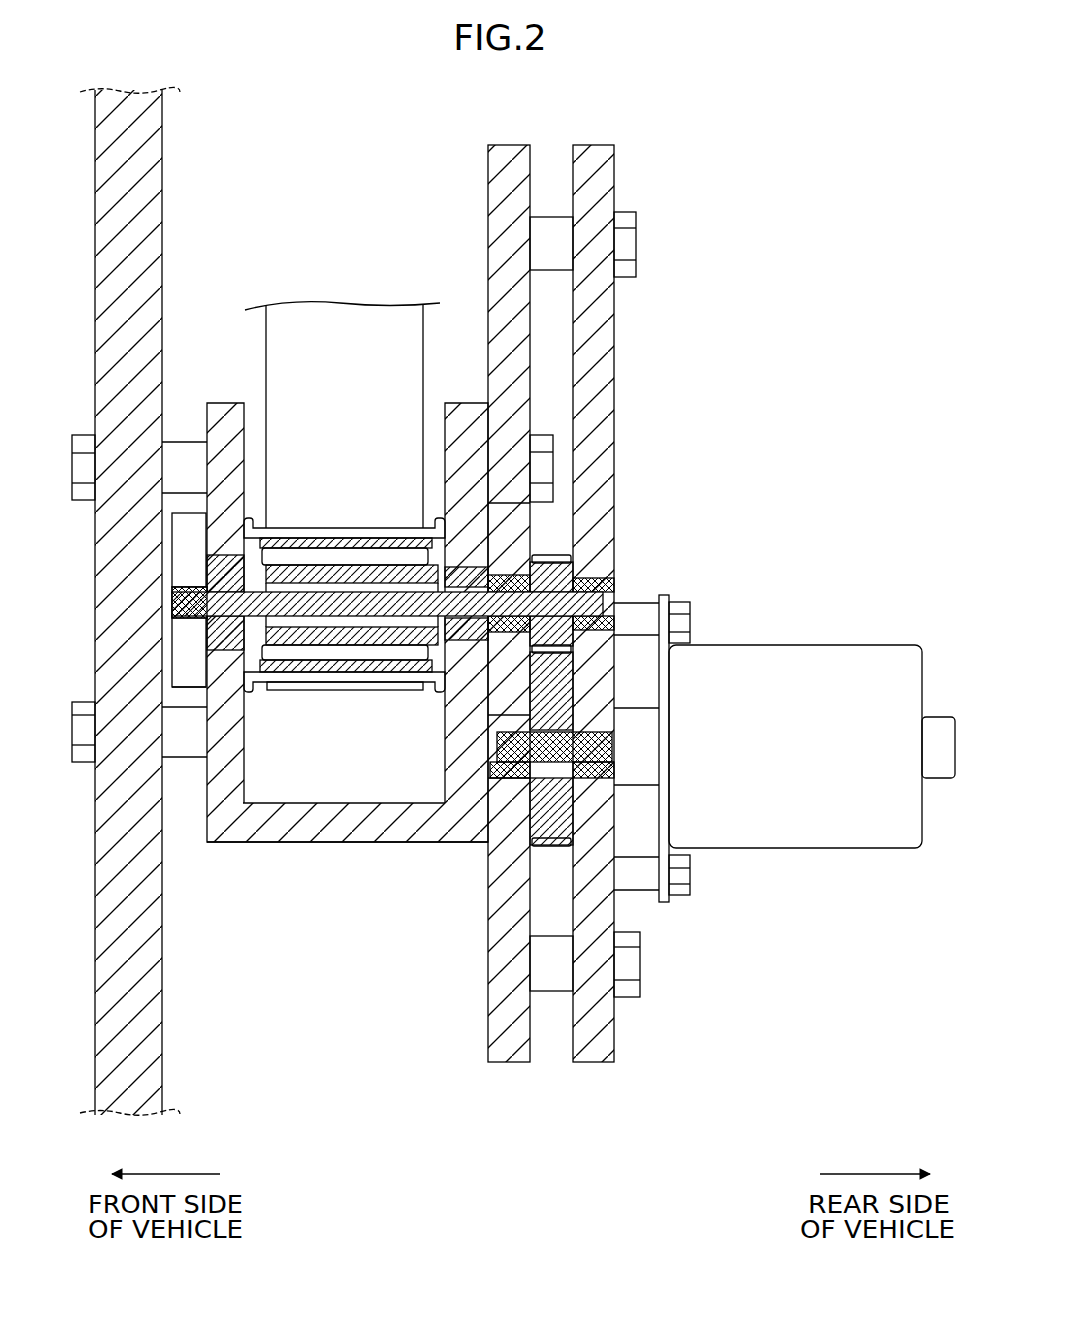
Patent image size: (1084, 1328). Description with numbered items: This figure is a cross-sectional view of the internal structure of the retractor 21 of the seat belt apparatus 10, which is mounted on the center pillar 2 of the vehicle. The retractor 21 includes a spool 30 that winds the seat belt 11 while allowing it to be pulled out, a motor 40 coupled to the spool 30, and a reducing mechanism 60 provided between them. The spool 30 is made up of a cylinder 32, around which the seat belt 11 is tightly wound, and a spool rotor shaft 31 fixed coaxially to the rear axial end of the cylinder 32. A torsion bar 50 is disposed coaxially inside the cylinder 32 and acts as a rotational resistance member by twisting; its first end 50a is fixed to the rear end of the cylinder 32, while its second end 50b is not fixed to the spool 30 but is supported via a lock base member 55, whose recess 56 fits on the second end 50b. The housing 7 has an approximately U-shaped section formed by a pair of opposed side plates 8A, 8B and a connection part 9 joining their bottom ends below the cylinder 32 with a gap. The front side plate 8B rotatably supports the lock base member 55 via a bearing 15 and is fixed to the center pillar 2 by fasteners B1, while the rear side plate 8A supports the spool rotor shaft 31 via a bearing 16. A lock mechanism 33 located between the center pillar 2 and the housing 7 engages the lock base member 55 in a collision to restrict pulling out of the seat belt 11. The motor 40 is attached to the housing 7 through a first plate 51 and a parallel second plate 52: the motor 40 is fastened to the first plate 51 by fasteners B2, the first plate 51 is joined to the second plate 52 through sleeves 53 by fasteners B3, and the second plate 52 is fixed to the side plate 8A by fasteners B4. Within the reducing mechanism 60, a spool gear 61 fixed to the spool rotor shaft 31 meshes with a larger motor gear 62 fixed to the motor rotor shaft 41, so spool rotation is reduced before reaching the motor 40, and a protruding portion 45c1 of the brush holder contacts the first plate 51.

The center pillar 2 is at (163, 1088).
The housing 7 is at (340, 843).
The side plate 8A is at (460, 403).
The side plate 8B is at (228, 403).
The connection part 9 is at (365, 843).
The steering device 10 is at (250, 256).
The seat belt 11 is at (355, 330).
The bearing 15 is at (205, 676).
The bearing 16 is at (500, 503).
The retractor 21 is at (258, 846).
The spool 30 is at (335, 527).
The spool rotor shaft 31 is at (608, 584).
The cylinder 32 is at (372, 536).
The lock mechanism 33 is at (172, 540).
The motor 40 is at (812, 645).
The motor rotor shaft 41 is at (660, 705).
The protruding portion 45c1 is at (638, 768).
The torsion bar 50 is at (322, 640).
The first end 50a is at (392, 650).
The second end 50b is at (262, 676).
The first plate 51 is at (595, 1063).
The second plate 52 is at (512, 1063).
The sleeves 53 is at (555, 992).
The lock base member 55 is at (176, 598).
The recess 56 is at (275, 578).
The reducing mechanism 60 is at (582, 568).
The spool gear 61 is at (536, 585).
The motor gear 62 is at (531, 792).
The fasteners B1 is at (80, 770).
The fasteners B2 is at (692, 877).
The fasteners B3 is at (642, 985).
The fasteners B4 is at (542, 437).